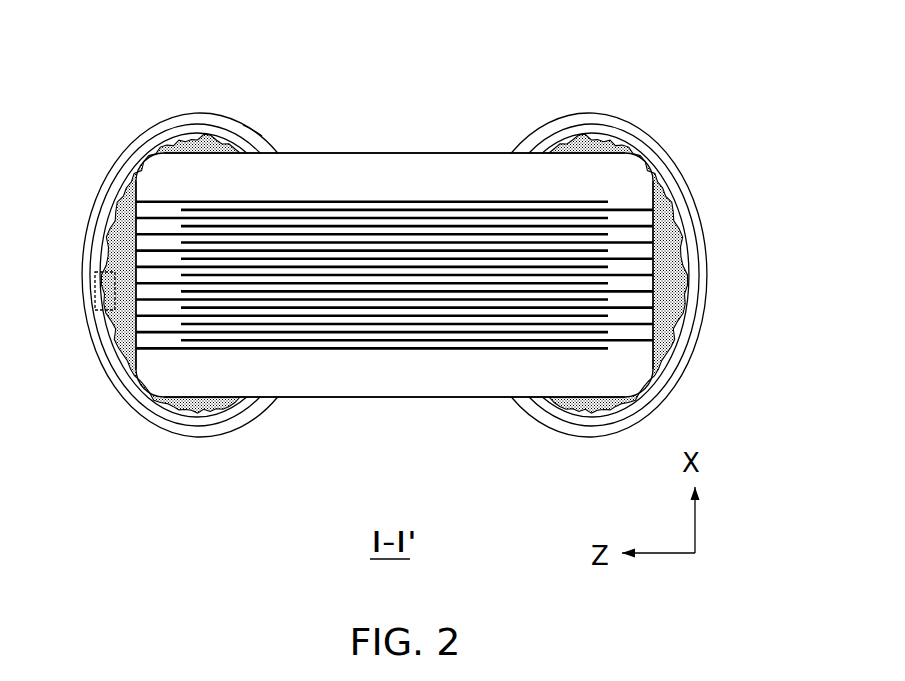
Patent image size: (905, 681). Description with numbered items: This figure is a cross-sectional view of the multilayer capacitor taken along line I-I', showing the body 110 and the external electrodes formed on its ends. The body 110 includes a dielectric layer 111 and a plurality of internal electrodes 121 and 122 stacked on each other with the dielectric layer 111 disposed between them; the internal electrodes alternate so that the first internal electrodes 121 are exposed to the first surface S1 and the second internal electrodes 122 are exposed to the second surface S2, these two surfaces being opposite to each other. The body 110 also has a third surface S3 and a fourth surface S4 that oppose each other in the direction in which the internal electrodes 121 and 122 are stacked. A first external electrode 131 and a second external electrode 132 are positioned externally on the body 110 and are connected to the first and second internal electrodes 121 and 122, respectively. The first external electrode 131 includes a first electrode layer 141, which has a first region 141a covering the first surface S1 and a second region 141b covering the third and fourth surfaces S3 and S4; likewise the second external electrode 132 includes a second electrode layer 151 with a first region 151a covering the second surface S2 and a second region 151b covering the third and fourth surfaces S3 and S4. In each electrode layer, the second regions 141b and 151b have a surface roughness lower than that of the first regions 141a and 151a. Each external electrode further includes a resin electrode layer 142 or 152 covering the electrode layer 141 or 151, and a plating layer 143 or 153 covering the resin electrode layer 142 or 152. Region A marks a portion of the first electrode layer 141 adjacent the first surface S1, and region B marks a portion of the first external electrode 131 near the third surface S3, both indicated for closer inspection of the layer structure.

The body 110 is at (407, 151).
The dielectric layer 111 is at (459, 203).
The first internal electrode 121 is at (322, 200).
The second internal electrode 122 is at (341, 207).
The first external electrode 131 is at (156, 226).
The second external electrode 132 is at (632, 226).
The first electrode layer 141 is at (156, 217).
The first region of first electrode layer 141a is at (120, 232).
The second region of first electrode layer 141b is at (173, 238).
The resin electrode layer 142 is at (120, 357).
The plating layer 143 is at (97, 339).
The second electrode layer 151 is at (631, 218).
The first region of second electrode layer 151a is at (682, 230).
The second region of second electrode layer 151b is at (615, 238).
The resin electrode layer 152 is at (678, 359).
The plating layer 153 is at (699, 339).
The first surface S1 is at (132, 312).
The second surface S2 is at (657, 287).
The third surface S3 is at (457, 150).
The fourth surface S4 is at (441, 400).
The enlarged region A is at (95, 283).
The region B is at (253, 128).